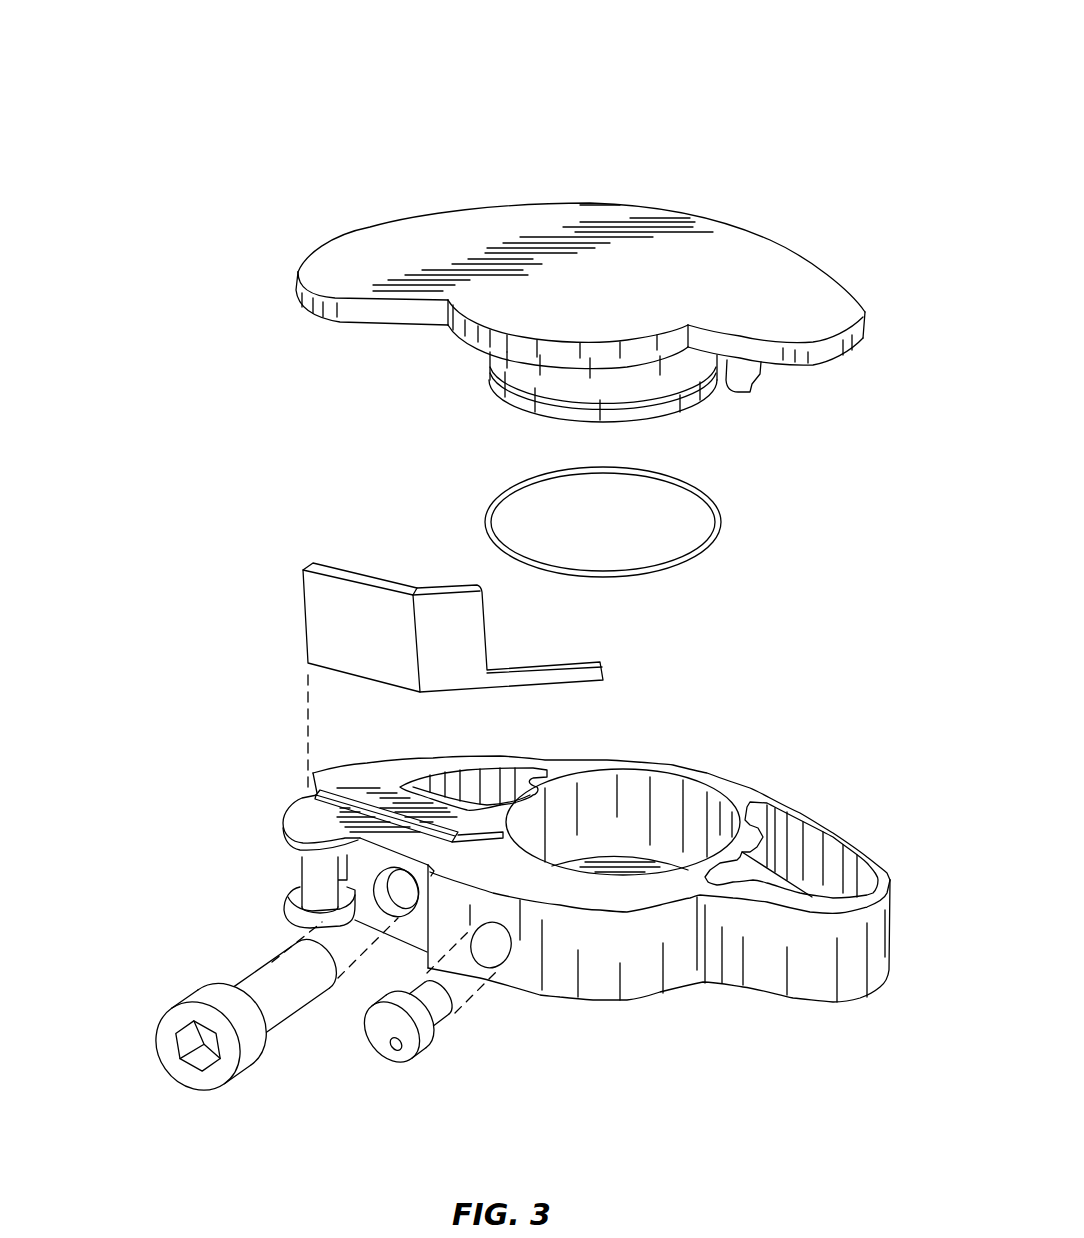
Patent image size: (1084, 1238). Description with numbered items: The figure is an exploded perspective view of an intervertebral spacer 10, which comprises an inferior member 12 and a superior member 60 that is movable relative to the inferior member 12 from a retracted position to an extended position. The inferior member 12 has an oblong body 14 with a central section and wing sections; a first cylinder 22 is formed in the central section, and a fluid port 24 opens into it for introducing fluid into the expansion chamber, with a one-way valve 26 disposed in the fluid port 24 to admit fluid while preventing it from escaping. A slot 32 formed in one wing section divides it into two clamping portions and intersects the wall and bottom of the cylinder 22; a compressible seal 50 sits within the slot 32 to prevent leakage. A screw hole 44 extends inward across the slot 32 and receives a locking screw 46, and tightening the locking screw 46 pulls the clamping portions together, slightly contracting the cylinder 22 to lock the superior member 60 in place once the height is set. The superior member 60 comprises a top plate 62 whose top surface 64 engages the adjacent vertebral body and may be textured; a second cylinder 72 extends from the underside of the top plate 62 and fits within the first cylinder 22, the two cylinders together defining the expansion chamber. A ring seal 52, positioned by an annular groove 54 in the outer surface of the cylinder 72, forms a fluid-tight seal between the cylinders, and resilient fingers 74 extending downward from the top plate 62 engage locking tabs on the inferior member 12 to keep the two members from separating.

The intervertebral spacer 10 is at (240, 88).
The inferior member 12 is at (738, 1040).
The body 14 is at (812, 800).
The first cylinder 22 is at (668, 772).
The fluid port 24 is at (502, 967).
The one-way valve 26 is at (410, 1028).
The slot 32 is at (383, 815).
The screw hole 44 is at (374, 920).
The locking screw 46 is at (180, 988).
The compressible seal 50 is at (332, 626).
The ring seal 52 is at (682, 566).
The annular groove 54 is at (492, 386).
The superior member 60 is at (778, 183).
The top plate 62 is at (360, 220).
The top surface 64 is at (530, 218).
The second cylinder 72 is at (642, 417).
The resilient fingers 74 is at (748, 397).